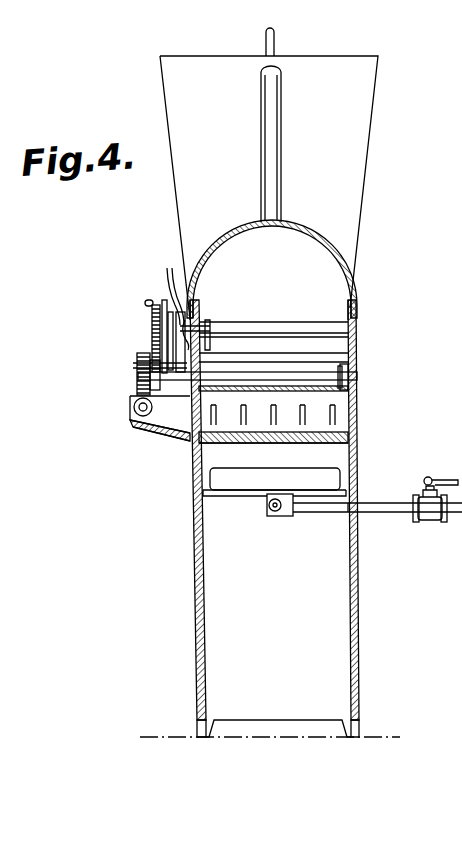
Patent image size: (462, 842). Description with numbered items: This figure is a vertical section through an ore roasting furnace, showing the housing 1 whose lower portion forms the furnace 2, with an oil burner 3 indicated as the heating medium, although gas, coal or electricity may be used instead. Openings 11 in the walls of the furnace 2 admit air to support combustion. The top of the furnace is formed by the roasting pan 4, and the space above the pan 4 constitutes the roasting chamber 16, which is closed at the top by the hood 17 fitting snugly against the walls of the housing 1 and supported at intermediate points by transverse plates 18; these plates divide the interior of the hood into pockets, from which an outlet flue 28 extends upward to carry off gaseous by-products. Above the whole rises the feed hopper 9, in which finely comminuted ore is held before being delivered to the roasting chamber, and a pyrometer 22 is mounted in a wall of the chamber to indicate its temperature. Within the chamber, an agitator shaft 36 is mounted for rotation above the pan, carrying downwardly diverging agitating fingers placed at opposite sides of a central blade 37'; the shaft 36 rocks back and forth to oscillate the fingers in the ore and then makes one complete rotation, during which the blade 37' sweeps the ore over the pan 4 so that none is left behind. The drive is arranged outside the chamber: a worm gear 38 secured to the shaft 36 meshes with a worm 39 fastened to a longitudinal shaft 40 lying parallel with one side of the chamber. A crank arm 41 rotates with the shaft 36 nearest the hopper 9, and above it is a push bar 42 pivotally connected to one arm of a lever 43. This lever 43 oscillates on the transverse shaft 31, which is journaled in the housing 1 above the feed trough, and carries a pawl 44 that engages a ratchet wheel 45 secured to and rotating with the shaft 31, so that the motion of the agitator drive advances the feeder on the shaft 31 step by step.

The housing 1 is at (360, 681).
The furnace 2 is at (222, 587).
The oil burner 3 is at (240, 483).
The roasting pan 4 is at (232, 442).
The feed hopper 9 is at (350, 157).
The opening 11 is at (196, 460).
The roasting chamber 16 is at (323, 372).
The hood 17 is at (330, 242).
The transverse plate 18 is at (327, 278).
The pyrometer 22 is at (187, 335).
The outlet flue 28 is at (270, 134).
The transverse shaft 31 is at (167, 268).
The agitator shaft 36 is at (353, 347).
The central blade 37' is at (303, 406).
The worm gear 38 is at (137, 375).
The worm 39 is at (128, 422).
The longitudinal shaft 40 is at (134, 405).
The crank arm 41 is at (172, 352).
The push bar 42 is at (185, 350).
The lever 43 is at (163, 295).
The pawl 44 is at (153, 296).
The ratchet wheel 45 is at (153, 327).